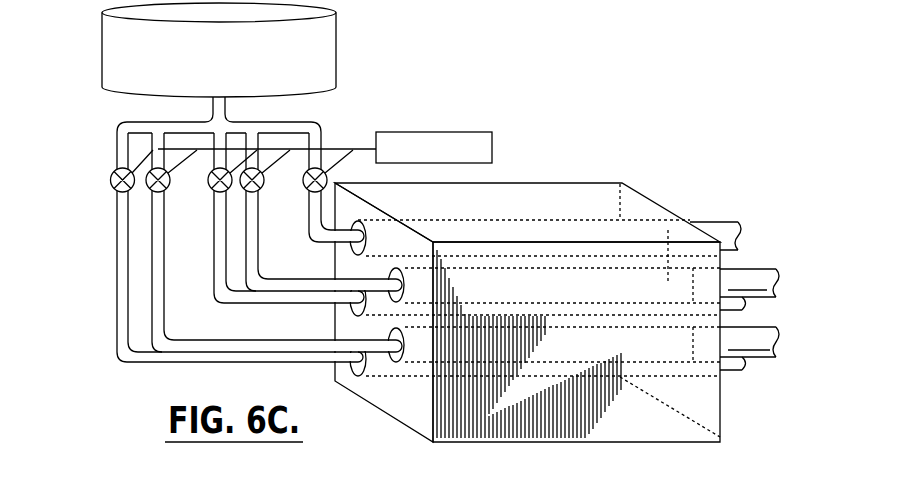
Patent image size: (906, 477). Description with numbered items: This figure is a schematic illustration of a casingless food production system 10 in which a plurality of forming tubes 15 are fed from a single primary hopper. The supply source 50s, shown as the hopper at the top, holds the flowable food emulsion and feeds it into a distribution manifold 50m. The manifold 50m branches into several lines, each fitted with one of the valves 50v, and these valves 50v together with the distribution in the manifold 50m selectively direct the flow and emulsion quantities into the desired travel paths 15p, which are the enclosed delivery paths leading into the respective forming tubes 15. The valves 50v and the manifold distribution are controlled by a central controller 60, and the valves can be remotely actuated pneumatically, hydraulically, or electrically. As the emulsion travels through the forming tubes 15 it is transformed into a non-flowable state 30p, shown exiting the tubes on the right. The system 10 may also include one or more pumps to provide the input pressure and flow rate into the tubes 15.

The casingless food production system 10 is at (572, 92).
The forming tube 15 is at (670, 232).
The enclosed delivery path 15p is at (188, 358).
The non-flowable state 30p is at (762, 340).
The supply source 50s is at (243, 72).
The distribution manifold 50m is at (107, 122).
The valves 50v is at (305, 190).
The central controller 60 is at (492, 147).